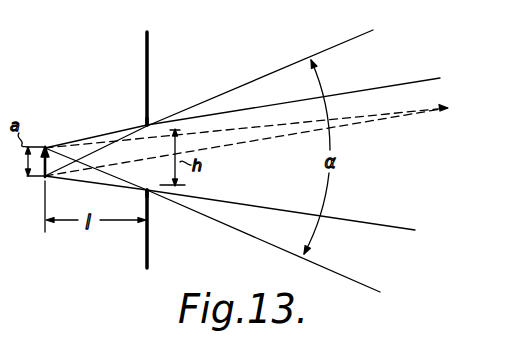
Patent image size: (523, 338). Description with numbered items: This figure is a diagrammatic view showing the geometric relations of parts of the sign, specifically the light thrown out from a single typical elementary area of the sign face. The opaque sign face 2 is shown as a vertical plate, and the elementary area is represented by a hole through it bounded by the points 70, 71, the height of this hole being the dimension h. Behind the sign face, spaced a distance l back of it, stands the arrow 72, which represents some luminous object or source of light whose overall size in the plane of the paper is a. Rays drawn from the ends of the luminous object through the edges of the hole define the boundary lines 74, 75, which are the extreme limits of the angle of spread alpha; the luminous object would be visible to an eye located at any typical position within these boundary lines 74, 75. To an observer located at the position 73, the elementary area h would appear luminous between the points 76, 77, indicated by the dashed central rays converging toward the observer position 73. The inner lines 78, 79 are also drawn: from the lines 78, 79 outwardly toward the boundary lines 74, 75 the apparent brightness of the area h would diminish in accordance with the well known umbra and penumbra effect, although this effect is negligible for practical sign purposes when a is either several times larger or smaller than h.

The sign face 2 is at (153, 76).
The point 70 is at (152, 125).
The point 71 is at (152, 192).
The arrow 72 is at (49, 160).
The observer position 73 is at (448, 107).
The boundary line 74 is at (360, 34).
The boundary line 75 is at (353, 284).
The point 76 is at (180, 137).
The point 77 is at (150, 158).
The line 78 is at (358, 90).
The line 79 is at (360, 222).